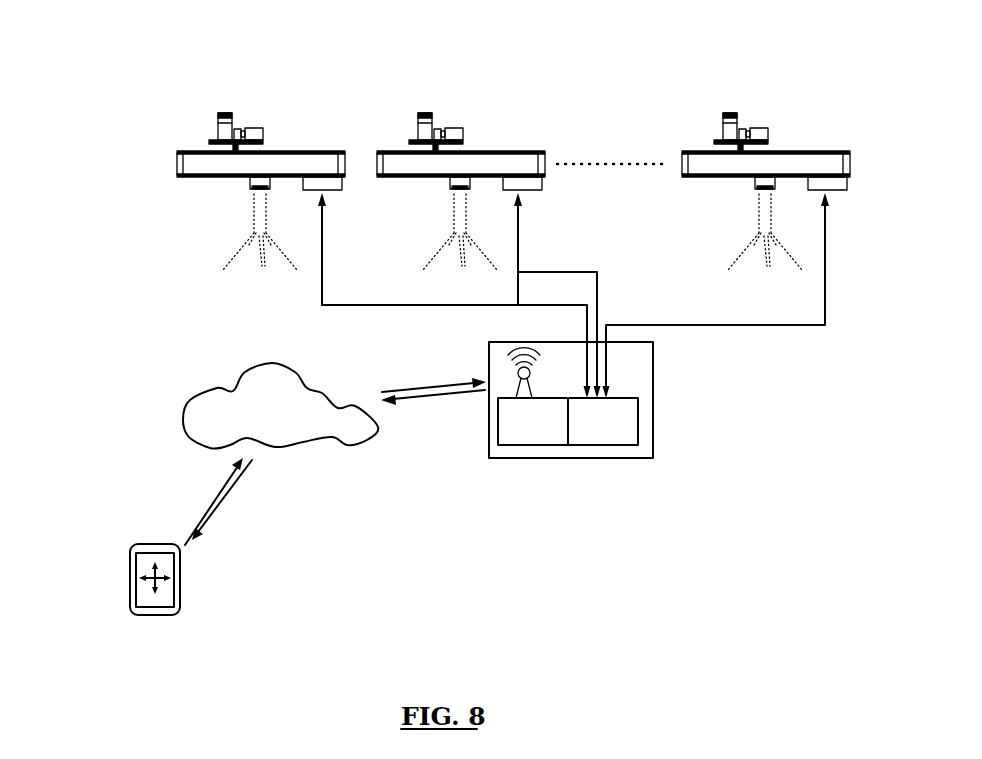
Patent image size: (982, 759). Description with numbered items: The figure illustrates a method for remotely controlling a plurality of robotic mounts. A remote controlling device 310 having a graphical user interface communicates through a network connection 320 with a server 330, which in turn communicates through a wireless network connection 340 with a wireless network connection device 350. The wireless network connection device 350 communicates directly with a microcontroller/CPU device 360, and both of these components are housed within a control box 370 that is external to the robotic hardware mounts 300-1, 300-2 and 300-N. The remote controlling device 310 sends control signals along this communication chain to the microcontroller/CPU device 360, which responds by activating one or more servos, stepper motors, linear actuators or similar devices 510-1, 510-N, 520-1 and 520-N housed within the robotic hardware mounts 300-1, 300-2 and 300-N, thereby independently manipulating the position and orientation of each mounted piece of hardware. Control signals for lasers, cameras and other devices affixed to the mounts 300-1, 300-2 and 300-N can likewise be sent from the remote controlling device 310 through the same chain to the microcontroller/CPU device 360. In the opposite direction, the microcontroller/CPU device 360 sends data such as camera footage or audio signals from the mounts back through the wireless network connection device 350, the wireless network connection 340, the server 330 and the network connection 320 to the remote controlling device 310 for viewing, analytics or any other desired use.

The robotic hardware mount 300-1 is at (235, 148).
The robotic hardware mount 300-2 is at (441, 148).
The robotic hardware mount 300-N is at (718, 147).
The servo, stepper motor, linear actuator or similar device 510-N is at (263, 138).
The servo, stepper motor, linear actuator or similar device 510-1 is at (329, 192).
The servo, stepper motor, linear actuator or similar device 520-N is at (474, 125).
The servo, stepper motor, linear actuator or similar device 520-1 is at (548, 203).
The remote controlling device 310 is at (130, 567).
The network connection 320 is at (198, 505).
The server 330 is at (200, 392).
The wireless network connection 340 is at (428, 408).
The wireless network connection device 350 is at (528, 445).
The microcontroller/CPU device 360 is at (608, 445).
The control box 370 is at (653, 392).